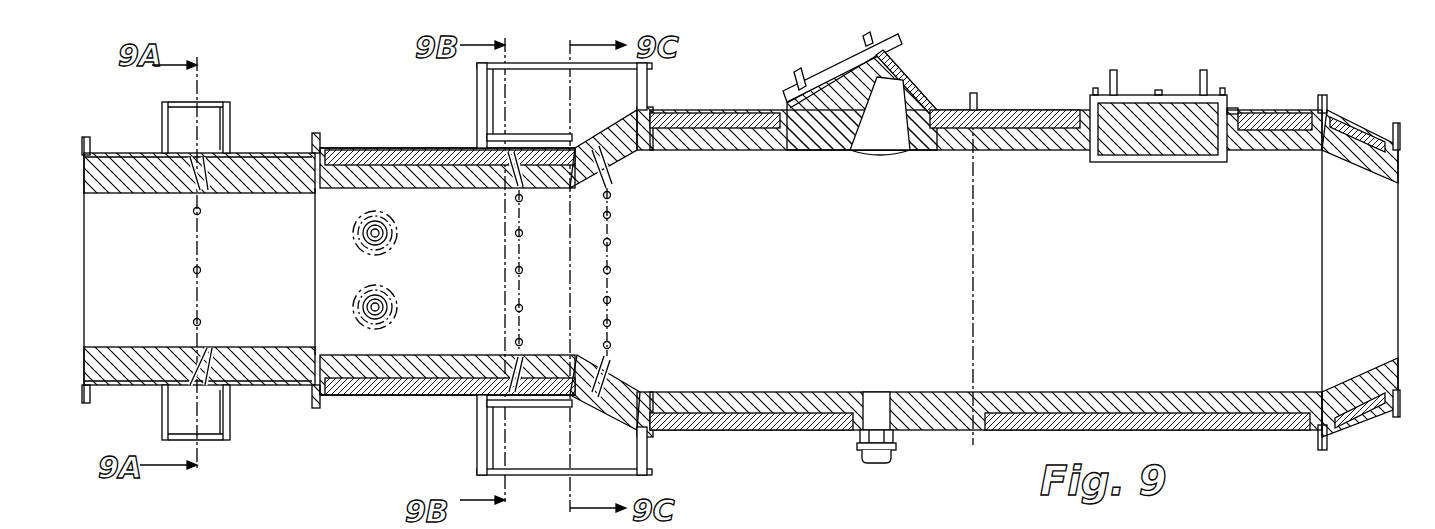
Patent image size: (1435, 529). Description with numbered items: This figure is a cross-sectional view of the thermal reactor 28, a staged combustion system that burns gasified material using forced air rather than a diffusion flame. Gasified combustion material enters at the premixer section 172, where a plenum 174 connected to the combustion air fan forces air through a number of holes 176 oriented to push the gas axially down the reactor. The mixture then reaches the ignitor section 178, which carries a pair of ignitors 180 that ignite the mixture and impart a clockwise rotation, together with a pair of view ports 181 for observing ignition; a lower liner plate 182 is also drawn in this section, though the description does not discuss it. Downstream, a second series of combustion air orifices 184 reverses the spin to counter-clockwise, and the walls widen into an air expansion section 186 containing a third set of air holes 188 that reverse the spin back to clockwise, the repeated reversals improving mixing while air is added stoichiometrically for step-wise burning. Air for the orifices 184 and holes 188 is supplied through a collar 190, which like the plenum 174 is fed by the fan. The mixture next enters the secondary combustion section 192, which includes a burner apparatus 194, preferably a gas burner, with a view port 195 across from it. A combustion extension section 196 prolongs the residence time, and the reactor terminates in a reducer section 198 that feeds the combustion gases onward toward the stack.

The thermal reactor 28 is at (1039, 92).
The premixer section 172 is at (272, 146).
The plenum 174 is at (162, 121).
The holes 176 is at (186, 271).
The ignitor section 178 is at (368, 143).
The ignitors 180 is at (390, 233).
The view ports 181 is at (388, 250).
The lower liner plate 182 is at (373, 393).
The combustion air orifices 184 is at (516, 233).
The air expansion section 186 is at (612, 124).
The air holes 188 is at (604, 240).
The collar 190 is at (477, 105).
The secondary combustion section 192 is at (704, 102).
The burner apparatus 194 is at (1120, 236).
The view port 195 is at (868, 465).
The combustion extension section 196 is at (1268, 97).
The reducer section 198 is at (1360, 110).